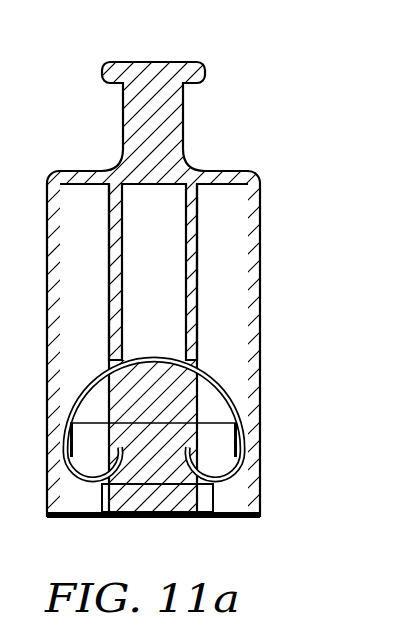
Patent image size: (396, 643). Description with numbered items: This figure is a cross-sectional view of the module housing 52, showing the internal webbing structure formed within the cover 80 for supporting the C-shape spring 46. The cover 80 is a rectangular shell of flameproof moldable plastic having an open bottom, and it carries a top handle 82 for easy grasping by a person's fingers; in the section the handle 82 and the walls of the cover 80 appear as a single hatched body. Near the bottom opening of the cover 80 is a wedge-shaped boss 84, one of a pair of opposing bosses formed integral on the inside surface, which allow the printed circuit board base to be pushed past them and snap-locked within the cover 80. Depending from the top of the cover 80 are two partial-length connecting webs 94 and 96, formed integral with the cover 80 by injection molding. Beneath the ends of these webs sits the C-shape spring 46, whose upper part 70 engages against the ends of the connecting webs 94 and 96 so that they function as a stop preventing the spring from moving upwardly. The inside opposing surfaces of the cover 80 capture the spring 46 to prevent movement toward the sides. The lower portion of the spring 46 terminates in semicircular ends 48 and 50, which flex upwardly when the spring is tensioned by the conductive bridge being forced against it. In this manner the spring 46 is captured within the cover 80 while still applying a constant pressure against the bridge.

The module housing 52 is at (252, 138).
The cover 80 is at (260, 291).
The top handle 82 is at (149, 62).
The wedge-shaped boss 84 is at (142, 505).
The partial-length web 94 is at (122, 287).
The partial-length web 96 is at (186, 243).
The C-shape spring 46 is at (241, 397).
The upper part of the spring 70 is at (148, 362).
The semicircular end 48 is at (93, 473).
The semicircular end 50 is at (220, 472).